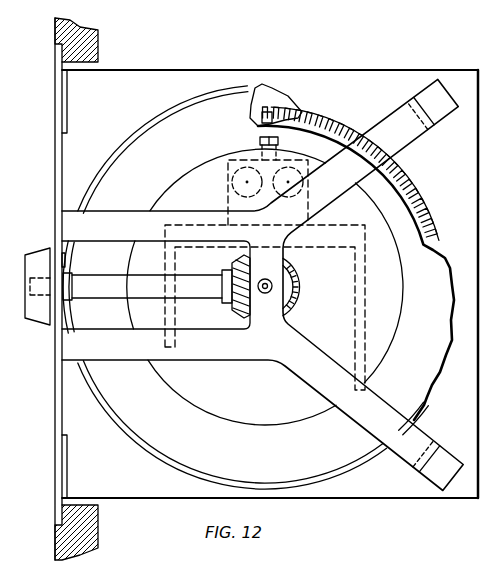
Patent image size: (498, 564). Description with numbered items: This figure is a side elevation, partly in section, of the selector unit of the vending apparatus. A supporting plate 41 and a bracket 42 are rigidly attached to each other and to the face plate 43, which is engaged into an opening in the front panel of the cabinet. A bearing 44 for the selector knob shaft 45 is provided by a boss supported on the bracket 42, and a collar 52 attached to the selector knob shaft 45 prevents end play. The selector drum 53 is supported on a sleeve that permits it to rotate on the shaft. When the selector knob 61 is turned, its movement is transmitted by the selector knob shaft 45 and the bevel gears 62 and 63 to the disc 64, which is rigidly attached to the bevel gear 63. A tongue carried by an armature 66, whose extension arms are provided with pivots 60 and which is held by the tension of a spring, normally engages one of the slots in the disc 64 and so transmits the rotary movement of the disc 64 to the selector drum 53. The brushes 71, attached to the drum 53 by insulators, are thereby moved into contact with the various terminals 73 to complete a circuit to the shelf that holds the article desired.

The supporting plate 41 is at (296, 71).
The bracket 42 is at (388, 120).
The face plate 43 is at (55, 402).
The bearing 44 is at (250, 266).
The selector knob shaft 45 is at (103, 296).
The collar 52 is at (75, 274).
The selector drum 53 is at (157, 449).
The pivots 60 is at (367, 341).
The selector knob 61 is at (36, 256).
The bevel gear 62 is at (232, 312).
The bevel gear 63 is at (300, 288).
The disc 64 is at (262, 424).
The armature 66 is at (228, 188).
The brushes 71 is at (304, 116).
The terminals 73 is at (272, 105).